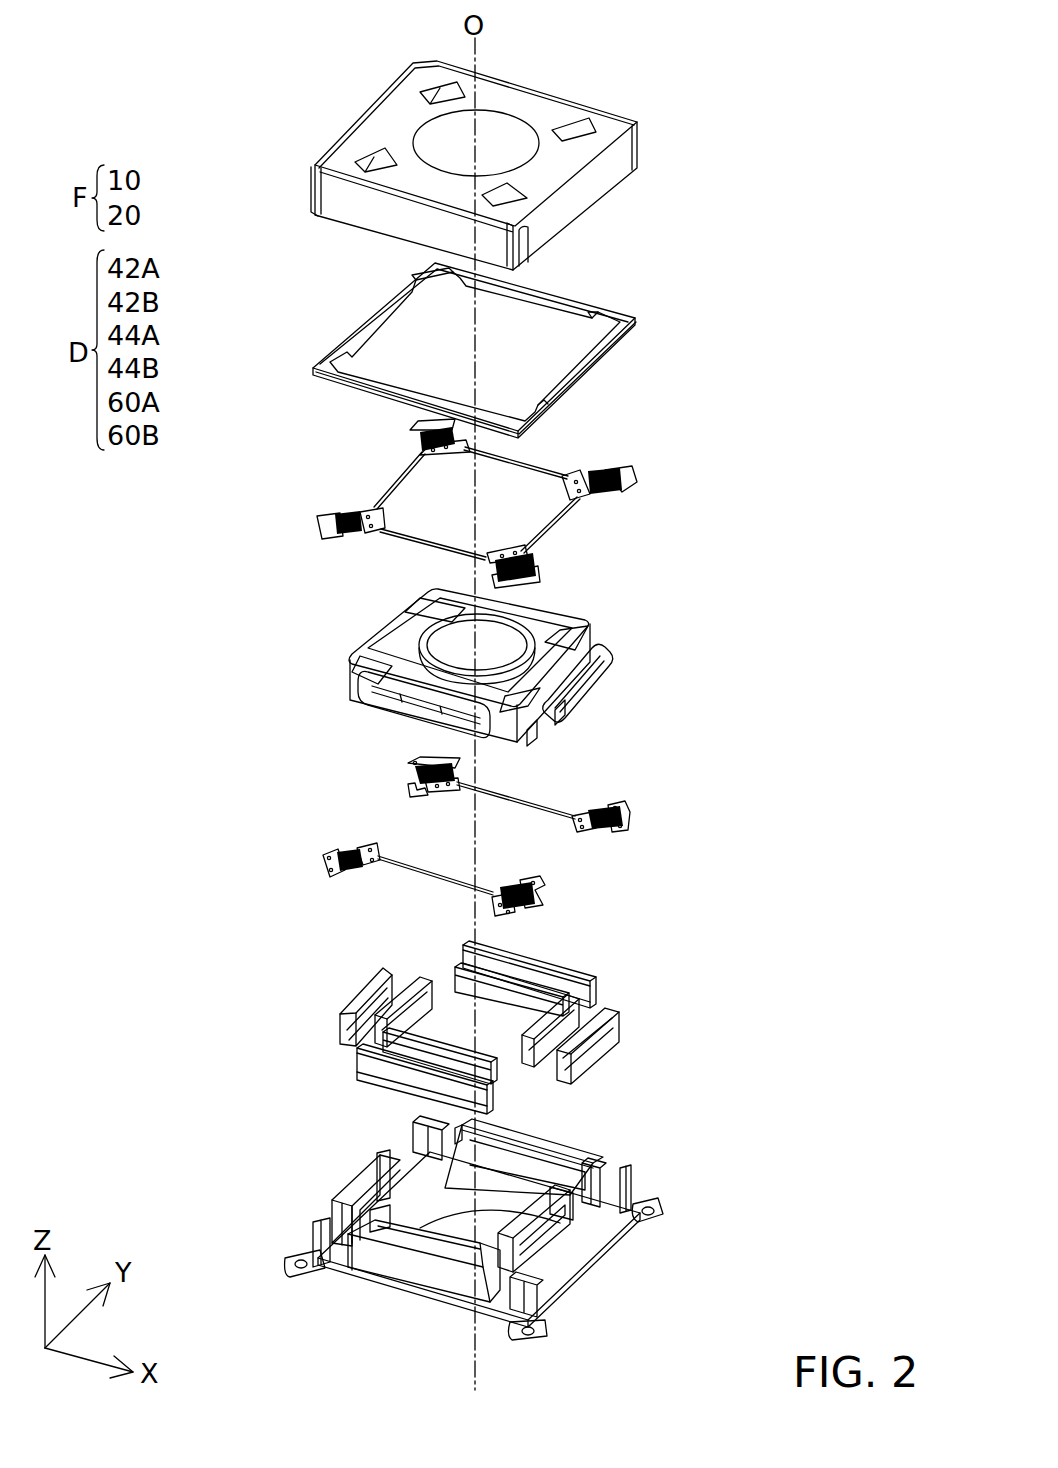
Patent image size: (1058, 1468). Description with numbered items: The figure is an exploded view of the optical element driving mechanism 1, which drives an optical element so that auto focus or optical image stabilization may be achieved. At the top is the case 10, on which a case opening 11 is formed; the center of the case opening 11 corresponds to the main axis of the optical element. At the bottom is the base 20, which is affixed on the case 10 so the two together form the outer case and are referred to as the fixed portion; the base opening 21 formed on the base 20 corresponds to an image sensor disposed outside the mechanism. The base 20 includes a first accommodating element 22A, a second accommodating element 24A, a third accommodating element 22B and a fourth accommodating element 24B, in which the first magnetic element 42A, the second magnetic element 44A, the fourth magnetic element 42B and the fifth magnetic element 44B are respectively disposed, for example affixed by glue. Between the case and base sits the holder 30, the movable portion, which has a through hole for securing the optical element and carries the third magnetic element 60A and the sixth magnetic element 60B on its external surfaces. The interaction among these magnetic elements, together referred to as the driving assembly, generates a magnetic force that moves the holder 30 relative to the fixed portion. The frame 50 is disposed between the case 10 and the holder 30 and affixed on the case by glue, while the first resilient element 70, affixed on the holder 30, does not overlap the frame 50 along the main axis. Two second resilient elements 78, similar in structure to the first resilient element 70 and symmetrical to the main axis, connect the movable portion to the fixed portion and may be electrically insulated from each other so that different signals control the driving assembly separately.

The optical element driving mechanism 1 is at (262, 46).
The case 10 is at (533, 150).
The case opening 11 is at (498, 148).
The base 20 is at (484, 1221).
The base opening 21 is at (463, 1230).
The first accommodating element 22A is at (610, 1146).
The third accommodating element 22B is at (614, 1249).
The second accommodating element 24A is at (505, 1188).
The fourth accommodating element 24B is at (567, 1233).
The holder 30 is at (487, 658).
The first magnetic element 42A is at (566, 982).
The fourth magnetic element 42B is at (582, 1060).
The second magnetic element 44A is at (552, 995).
The fifth magnetic element 44B is at (560, 1028).
The frame 50 is at (580, 369).
The third magnetic element 60A is at (600, 598).
The sixth magnetic element 60B is at (577, 685).
The first resilient element 70 is at (580, 532).
The second resilient element 78 is at (628, 822).